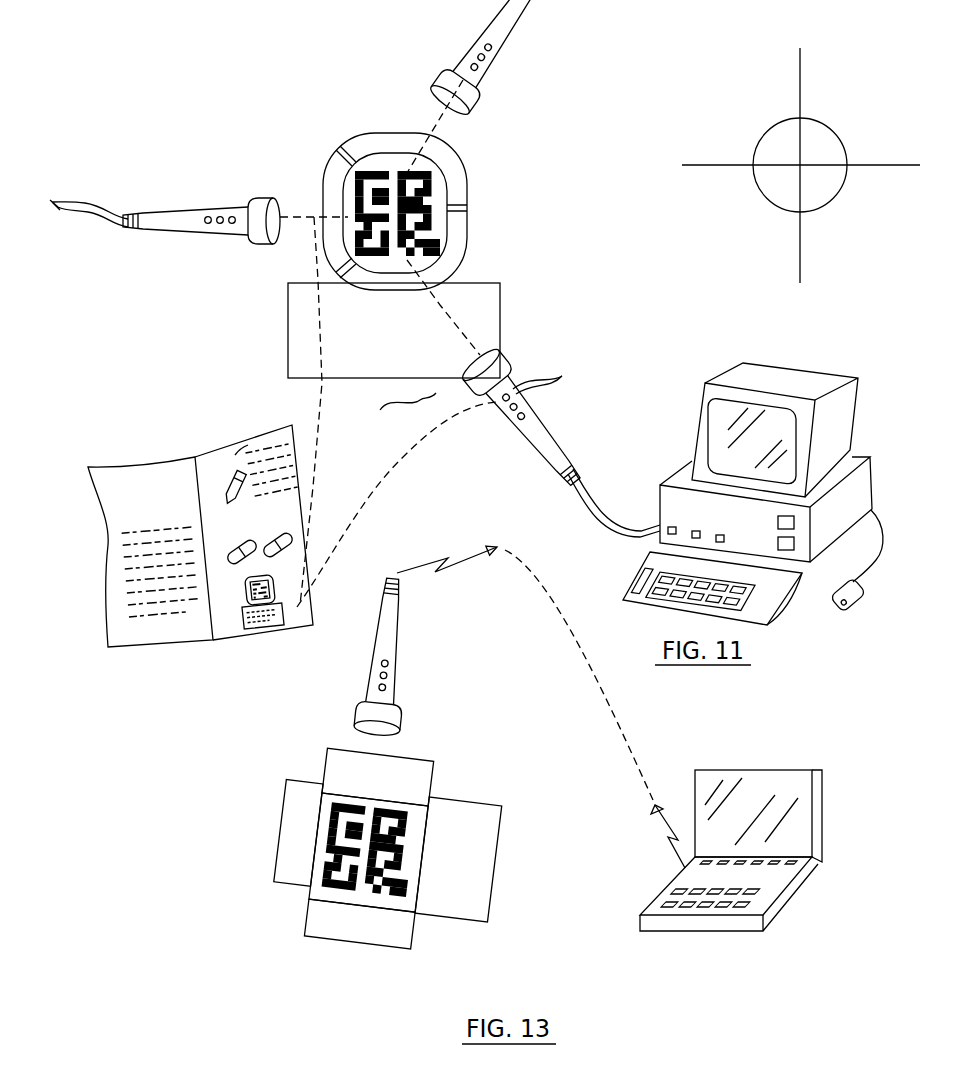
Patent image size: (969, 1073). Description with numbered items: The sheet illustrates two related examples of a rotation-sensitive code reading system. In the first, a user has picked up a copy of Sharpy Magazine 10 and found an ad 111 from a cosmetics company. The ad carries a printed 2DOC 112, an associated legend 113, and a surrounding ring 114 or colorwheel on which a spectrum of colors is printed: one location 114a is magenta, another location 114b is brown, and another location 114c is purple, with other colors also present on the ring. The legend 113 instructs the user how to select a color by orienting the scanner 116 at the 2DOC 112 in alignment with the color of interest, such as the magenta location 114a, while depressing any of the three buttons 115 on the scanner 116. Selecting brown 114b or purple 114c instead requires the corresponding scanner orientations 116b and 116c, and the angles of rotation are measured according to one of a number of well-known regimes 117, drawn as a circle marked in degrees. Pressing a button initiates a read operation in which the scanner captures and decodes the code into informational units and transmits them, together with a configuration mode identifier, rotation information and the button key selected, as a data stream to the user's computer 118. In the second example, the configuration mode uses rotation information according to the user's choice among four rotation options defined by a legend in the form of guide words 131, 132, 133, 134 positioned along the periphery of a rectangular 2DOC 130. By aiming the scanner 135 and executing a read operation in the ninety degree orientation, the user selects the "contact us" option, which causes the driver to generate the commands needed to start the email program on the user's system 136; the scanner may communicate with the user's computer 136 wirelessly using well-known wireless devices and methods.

In FIG. 11, the article / printed publication 10 is at (142, 450).
In FIG. 11, the ad 111 is at (233, 447).
In FIG. 11, the printed 2DOC 112 is at (443, 182).
In FIG. 11, the legend 113 is at (500, 307).
In FIG. 11, the surrounding ring 114 is at (455, 258).
In FIG. 11, the location having the color magenta 114a is at (352, 148).
In FIG. 11, the location having the color brown 114b is at (467, 208).
In FIG. 11, the location having the color purple 114c is at (335, 274).
In FIG. 11, the buttons 115 is at (562, 376).
In FIG. 11, the scanner 116 is at (548, 431).
In FIG. 11, the scanner orientation 116b is at (172, 213).
In FIG. 11, the scanner orientation 116c is at (494, 60).
In FIG. 11, the angle measurement regime 117 is at (847, 193).
In FIG. 11, the user's computer 118 is at (790, 363).
In FIG. 13, the rectangular 2DOC 130 is at (365, 846).
In FIG. 13, the guide word 131 is at (298, 833).
In FIG. 13, the guide word 132 is at (378, 777).
In FIG. 13, the guide word 133 is at (457, 860).
In FIG. 13, the guide word 134 is at (359, 921).
In FIG. 13, the scanner 135 is at (400, 648).
In FIG. 13, the user's system 136 is at (822, 812).